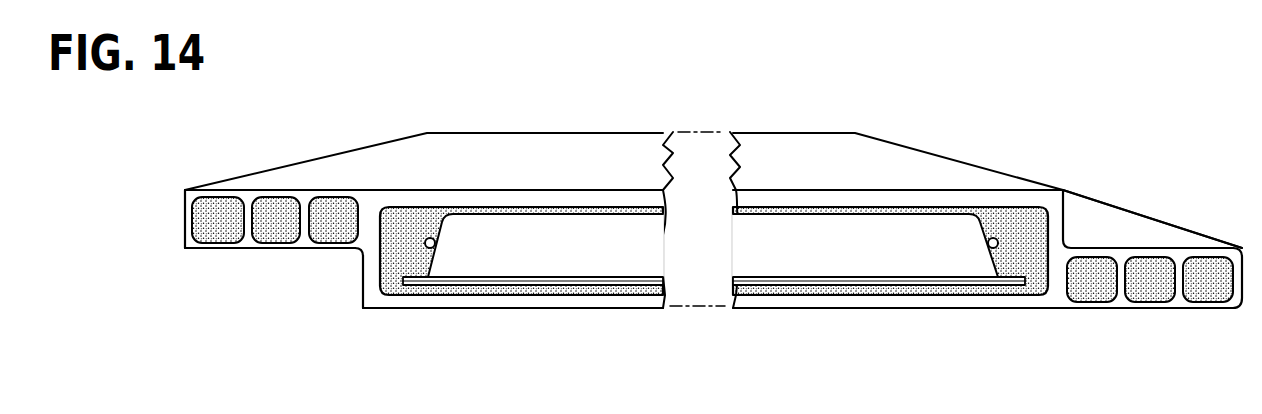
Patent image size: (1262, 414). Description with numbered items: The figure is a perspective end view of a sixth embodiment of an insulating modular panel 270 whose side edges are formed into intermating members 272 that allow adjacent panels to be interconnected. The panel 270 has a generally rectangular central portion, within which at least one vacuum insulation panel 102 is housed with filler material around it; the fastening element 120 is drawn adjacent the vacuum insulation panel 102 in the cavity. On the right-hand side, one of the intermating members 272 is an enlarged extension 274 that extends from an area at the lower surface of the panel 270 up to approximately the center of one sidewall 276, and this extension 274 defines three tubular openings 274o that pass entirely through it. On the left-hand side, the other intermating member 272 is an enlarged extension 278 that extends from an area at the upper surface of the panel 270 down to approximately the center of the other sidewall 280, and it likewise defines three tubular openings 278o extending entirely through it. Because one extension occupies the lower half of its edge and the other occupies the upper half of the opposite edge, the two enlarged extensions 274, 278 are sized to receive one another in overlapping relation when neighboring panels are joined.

The insulating panel 270 is at (874, 114).
The intermating members 272 is at (330, 256).
The enlarged extension 274 is at (1182, 298).
The tubular openings 274o is at (1097, 266).
The sidewall 276 is at (1058, 228).
The enlarged extension 278 is at (247, 198).
The tubular openings 278o is at (322, 231).
The sidewall 280 is at (364, 270).
The vacuum insulation panel 102 is at (593, 263).
The fastener loop 120 is at (435, 244).